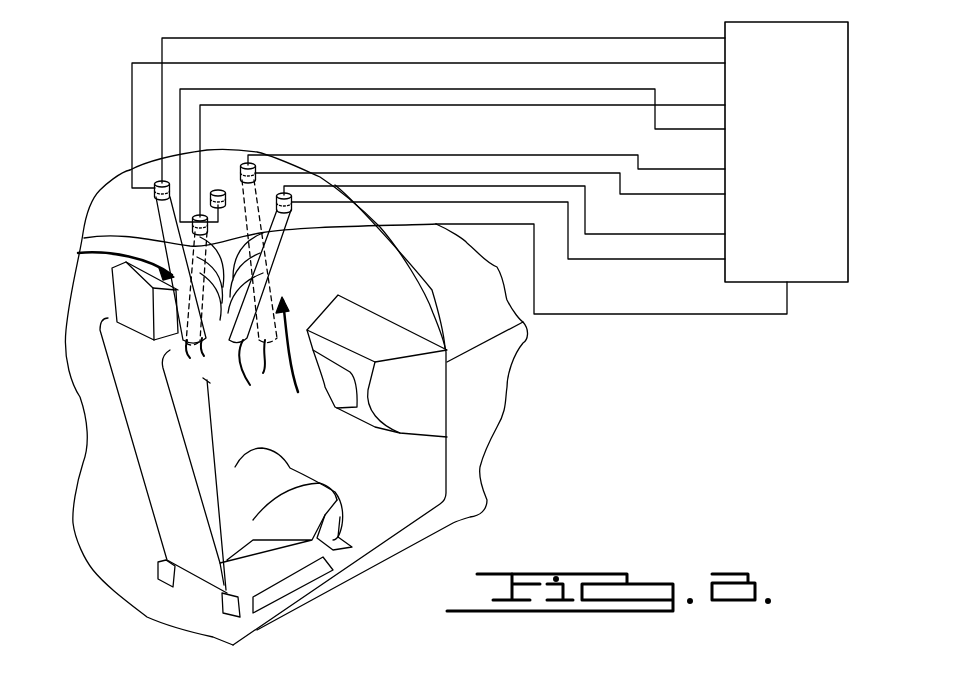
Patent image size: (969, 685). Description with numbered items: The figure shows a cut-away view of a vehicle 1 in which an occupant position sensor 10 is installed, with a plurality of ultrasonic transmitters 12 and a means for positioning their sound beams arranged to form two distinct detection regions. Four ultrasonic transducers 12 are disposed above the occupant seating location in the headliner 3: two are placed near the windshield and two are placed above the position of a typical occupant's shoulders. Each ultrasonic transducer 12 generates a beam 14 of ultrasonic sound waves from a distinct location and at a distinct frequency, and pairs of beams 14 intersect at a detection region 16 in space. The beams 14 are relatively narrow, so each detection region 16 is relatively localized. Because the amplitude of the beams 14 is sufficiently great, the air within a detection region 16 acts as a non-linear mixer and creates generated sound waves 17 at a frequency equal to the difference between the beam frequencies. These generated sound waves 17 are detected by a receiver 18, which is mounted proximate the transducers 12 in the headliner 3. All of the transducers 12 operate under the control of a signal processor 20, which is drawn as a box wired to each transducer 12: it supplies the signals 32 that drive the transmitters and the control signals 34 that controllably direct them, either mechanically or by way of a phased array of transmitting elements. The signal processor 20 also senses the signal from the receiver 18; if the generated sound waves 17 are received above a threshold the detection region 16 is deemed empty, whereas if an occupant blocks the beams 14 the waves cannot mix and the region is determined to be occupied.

The vehicle 1 is at (503, 362).
The headliner 3 is at (113, 210).
The occupant position sensor 10 is at (97, 48).
The ultrasonic transducer 12 is at (150, 180).
The beam of ultrasonic sound waves 14 is at (227, 370).
The detection region 16 is at (185, 333).
The generated sound waves 17 is at (262, 272).
The receiver 18 is at (218, 186).
The signal processor 20 is at (815, 283).
The signals 32 is at (464, 137).
The control signals 34 is at (449, 162).